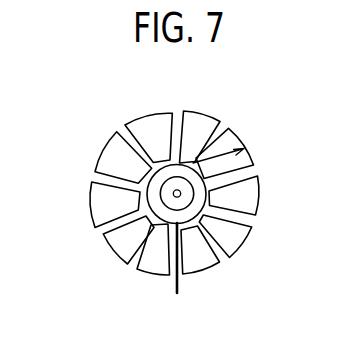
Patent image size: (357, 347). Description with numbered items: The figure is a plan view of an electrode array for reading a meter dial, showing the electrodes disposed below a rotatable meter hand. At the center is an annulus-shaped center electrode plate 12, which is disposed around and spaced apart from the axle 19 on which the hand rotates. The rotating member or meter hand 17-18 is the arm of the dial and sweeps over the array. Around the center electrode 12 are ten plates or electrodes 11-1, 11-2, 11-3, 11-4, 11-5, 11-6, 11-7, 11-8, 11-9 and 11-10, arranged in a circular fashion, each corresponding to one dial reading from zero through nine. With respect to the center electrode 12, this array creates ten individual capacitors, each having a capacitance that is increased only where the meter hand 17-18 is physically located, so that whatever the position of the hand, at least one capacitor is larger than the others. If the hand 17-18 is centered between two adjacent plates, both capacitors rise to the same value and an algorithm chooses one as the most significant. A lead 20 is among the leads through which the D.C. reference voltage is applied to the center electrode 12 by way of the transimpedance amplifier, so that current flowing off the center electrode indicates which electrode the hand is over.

The electrode 11-1 is at (195, 110).
The electrode 11-2 is at (230, 134).
The electrode 11-3 is at (258, 193).
The electrode 11-4 is at (250, 231).
The electrode 11-5 is at (207, 271).
The electrode 11-6 is at (152, 274).
The electrode 11-7 is at (113, 259).
The electrode 11-8 is at (92, 201).
The electrode 11-9 is at (97, 151).
The electrode 11-10 is at (134, 125).
The center electrode plate 12 is at (153, 197).
The axle 19 is at (174, 190).
The lead 20 is at (180, 291).
The meter hand 17-18 is at (244, 148).